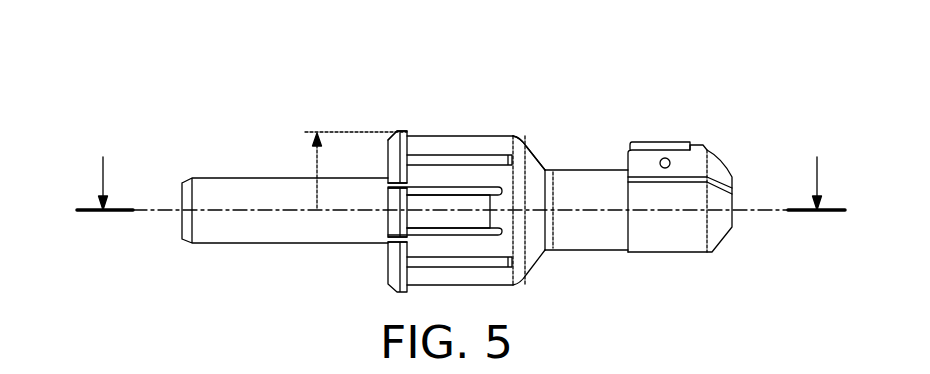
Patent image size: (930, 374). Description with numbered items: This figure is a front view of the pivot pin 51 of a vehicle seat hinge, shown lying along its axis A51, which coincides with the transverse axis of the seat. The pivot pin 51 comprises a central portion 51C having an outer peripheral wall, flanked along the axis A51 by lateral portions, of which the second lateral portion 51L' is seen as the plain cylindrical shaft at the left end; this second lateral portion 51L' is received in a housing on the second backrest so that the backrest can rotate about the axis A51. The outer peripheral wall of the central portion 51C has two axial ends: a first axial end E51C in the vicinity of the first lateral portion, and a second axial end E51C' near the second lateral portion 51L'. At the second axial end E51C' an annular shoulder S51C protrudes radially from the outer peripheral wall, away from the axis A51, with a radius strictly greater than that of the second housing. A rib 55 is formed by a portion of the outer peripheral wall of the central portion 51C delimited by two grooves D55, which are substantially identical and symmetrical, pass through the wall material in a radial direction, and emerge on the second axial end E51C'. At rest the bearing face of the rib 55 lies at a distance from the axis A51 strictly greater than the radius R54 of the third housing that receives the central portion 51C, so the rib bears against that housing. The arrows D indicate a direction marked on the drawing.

The pivot pin 51 is at (556, 84).
The central portion 51C is at (467, 105).
The first axial end E51C is at (580, 115).
The second axial end E51C' is at (399, 79).
The annular shoulder S51C is at (370, 155).
The second lateral portion 51L' is at (285, 161).
The radius of the third housing R54 is at (317, 192).
The rib 55 is at (487, 222).
The grooves D55 is at (367, 200).
The direction of engagement D is at (464, 183).
The axis of the pivot pin A51 is at (758, 213).